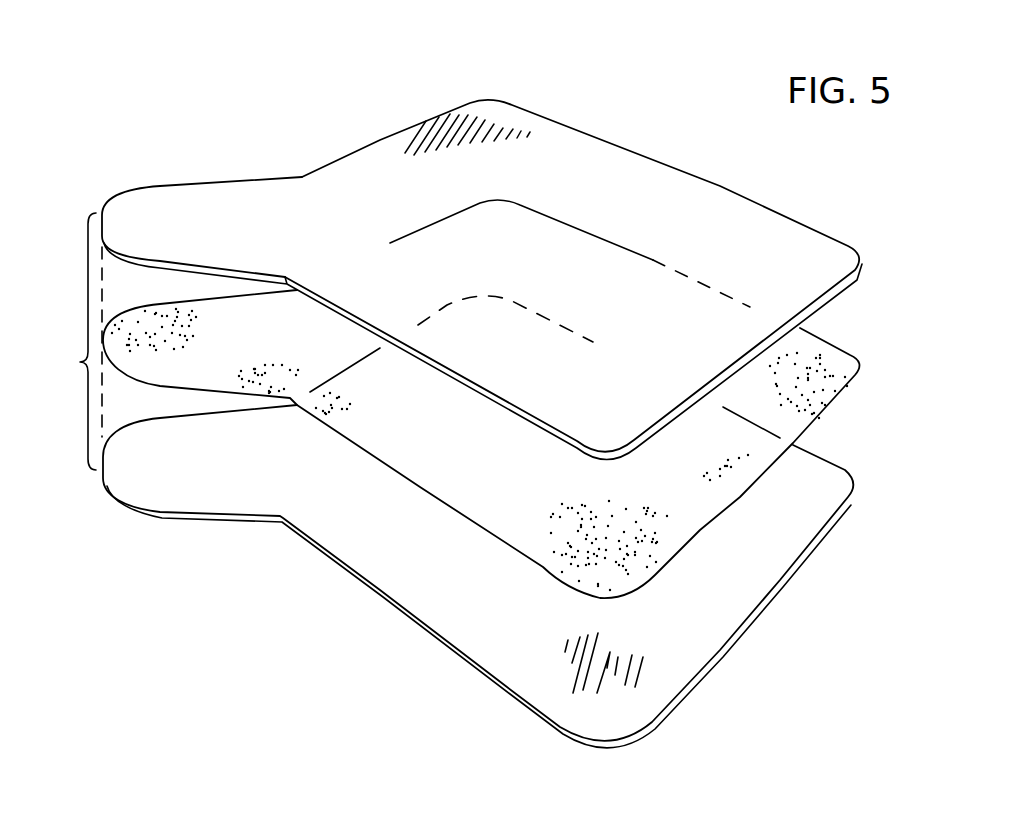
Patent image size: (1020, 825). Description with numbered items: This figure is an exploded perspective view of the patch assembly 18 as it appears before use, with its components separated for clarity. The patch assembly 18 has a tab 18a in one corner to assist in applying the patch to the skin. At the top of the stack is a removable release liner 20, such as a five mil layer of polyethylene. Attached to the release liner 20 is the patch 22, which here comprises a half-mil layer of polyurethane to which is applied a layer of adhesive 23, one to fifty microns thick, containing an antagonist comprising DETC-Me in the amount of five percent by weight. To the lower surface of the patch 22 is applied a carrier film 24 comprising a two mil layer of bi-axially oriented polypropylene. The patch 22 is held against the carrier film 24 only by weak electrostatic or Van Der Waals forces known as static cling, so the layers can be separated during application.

The patch assembly 18 is at (455, 421).
The tab 18a is at (66, 341).
The removable release liner 20 is at (783, 240).
The patch 22 is at (481, 492).
The layer of adhesive 23 is at (613, 520).
The carrier film 24 is at (507, 687).